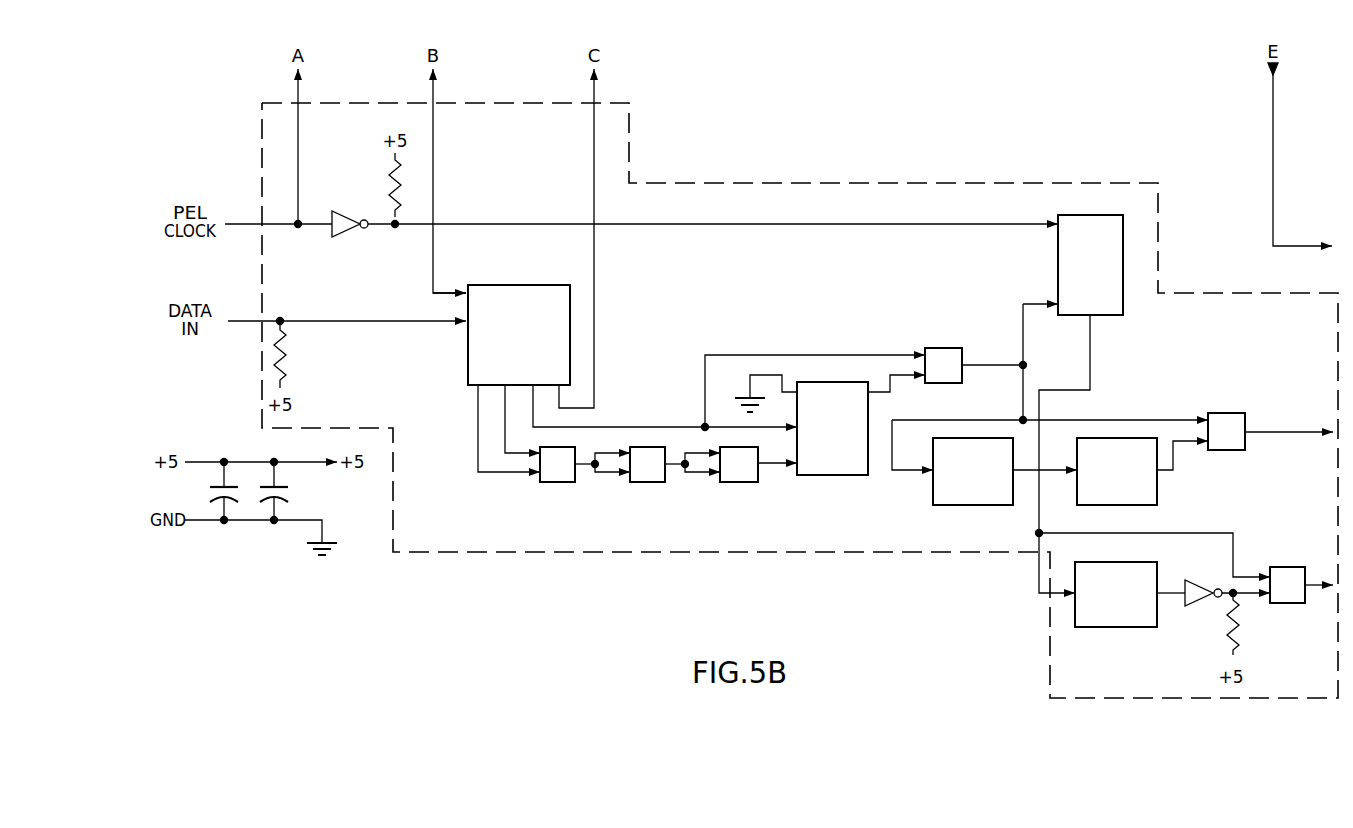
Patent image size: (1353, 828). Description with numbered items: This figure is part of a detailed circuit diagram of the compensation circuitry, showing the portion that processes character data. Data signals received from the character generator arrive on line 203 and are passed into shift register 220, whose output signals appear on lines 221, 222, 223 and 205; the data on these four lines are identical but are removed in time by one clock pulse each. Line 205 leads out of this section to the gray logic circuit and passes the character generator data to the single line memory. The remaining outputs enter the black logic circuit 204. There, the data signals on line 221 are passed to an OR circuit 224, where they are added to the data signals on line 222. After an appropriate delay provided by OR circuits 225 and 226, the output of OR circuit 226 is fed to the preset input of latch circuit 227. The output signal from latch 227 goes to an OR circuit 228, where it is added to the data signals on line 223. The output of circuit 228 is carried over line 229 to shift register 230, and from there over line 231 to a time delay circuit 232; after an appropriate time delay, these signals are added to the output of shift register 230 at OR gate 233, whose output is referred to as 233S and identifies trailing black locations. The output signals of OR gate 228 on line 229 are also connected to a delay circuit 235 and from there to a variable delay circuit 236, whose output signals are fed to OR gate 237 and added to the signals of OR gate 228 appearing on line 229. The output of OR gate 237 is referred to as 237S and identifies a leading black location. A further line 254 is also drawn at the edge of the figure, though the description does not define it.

The line 203 is at (330, 321).
The black logic circuit 204 is at (718, 183).
The line 205 is at (597, 283).
The shift register 220 is at (530, 285).
The line 221 is at (478, 437).
The line 222 is at (505, 406).
The line 223 is at (608, 427).
The OR circuit 224 is at (574, 482).
The OR circuit 225 is at (664, 482).
The OR circuit 226 is at (757, 482).
The latch circuit 227 is at (830, 477).
The OR circuit 228 is at (935, 348).
The line 229 is at (1013, 370).
The shift register 230 is at (1090, 215).
The line 231 is at (1090, 378).
The time delay circuit 232 is at (1133, 627).
The OR gate 233 is at (1290, 567).
The output of OR gate 233 233S is at (1315, 590).
The delay circuit 235 is at (985, 507).
The variable delay circuit 236 is at (1157, 503).
The OR gate 237 is at (1223, 419).
The output of OR gate 237 237S is at (1303, 432).
The line E 254 is at (1273, 183).